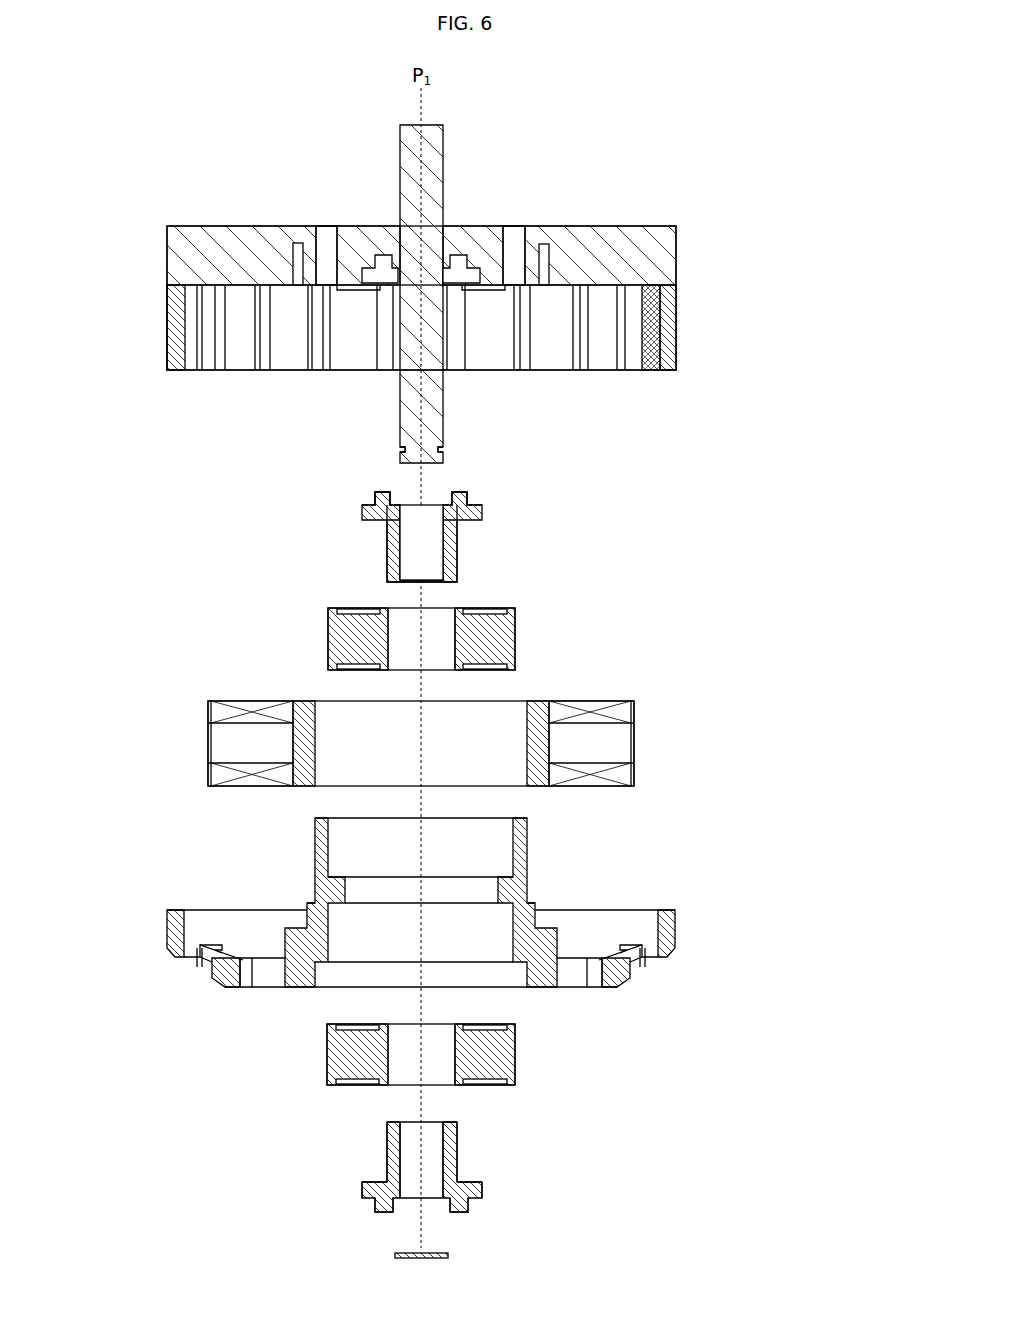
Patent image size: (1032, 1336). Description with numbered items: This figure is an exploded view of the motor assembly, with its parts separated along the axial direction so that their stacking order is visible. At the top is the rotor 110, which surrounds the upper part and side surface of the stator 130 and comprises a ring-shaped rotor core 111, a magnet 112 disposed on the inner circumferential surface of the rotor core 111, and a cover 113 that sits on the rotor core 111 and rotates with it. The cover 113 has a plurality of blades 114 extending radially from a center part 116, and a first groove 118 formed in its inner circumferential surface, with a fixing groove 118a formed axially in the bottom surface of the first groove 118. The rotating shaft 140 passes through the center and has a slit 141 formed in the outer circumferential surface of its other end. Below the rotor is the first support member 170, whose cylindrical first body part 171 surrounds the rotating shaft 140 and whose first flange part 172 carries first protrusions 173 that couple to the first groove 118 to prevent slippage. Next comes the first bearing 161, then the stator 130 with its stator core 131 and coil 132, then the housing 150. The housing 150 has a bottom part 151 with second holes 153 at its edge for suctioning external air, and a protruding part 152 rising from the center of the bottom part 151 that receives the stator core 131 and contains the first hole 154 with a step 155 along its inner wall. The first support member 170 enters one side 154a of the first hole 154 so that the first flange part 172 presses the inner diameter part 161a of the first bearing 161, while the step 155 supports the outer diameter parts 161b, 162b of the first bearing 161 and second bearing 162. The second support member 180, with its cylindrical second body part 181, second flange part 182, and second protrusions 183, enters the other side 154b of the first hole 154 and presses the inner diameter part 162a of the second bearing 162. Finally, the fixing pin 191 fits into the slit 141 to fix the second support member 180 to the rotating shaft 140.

The rotor 110 is at (475, 250).
The rotor core 111 is at (678, 298).
The magnet 112 is at (560, 352).
The cover 113 is at (684, 233).
The blades 114 is at (586, 238).
The center part 116 is at (478, 238).
The first groove 118 is at (370, 273).
The fixing groove 118a is at (386, 258).
The stator 130 is at (485, 720).
The stator core 131 is at (302, 705).
The coil 132 is at (634, 714).
The rotating shaft 140 is at (432, 132).
The slit 141 is at (448, 450).
The housing 150 is at (464, 932).
The bottom part 151 is at (612, 989).
The protruding part 152 is at (322, 845).
The second holes 153 is at (648, 966).
The first hole 154 is at (350, 918).
The one side of the first hole 154a is at (330, 815).
The other side of the first hole 154b is at (327, 989).
The step 155 is at (498, 890).
The first bearing 161 is at (481, 616).
The inner diameter part of the first bearing 161a is at (468, 608).
The outer diameter part of the first bearing 161b is at (516, 668).
The second bearing 162 is at (442, 1079).
The inner diameter part of the second bearing 162a is at (385, 1084).
The outer diameter part of the second bearing 162b is at (380, 1080).
The first support member 170 is at (453, 511).
The first body part 171 is at (390, 548).
The first flange part 172 is at (362, 512).
The first protrusions 173 is at (380, 492).
The second support member 180 is at (456, 1178).
The second body part 181 is at (388, 1150).
The second flange part 182 is at (368, 1192).
The second protrusions 183 is at (378, 1206).
The fixing pin 191 is at (396, 1256).